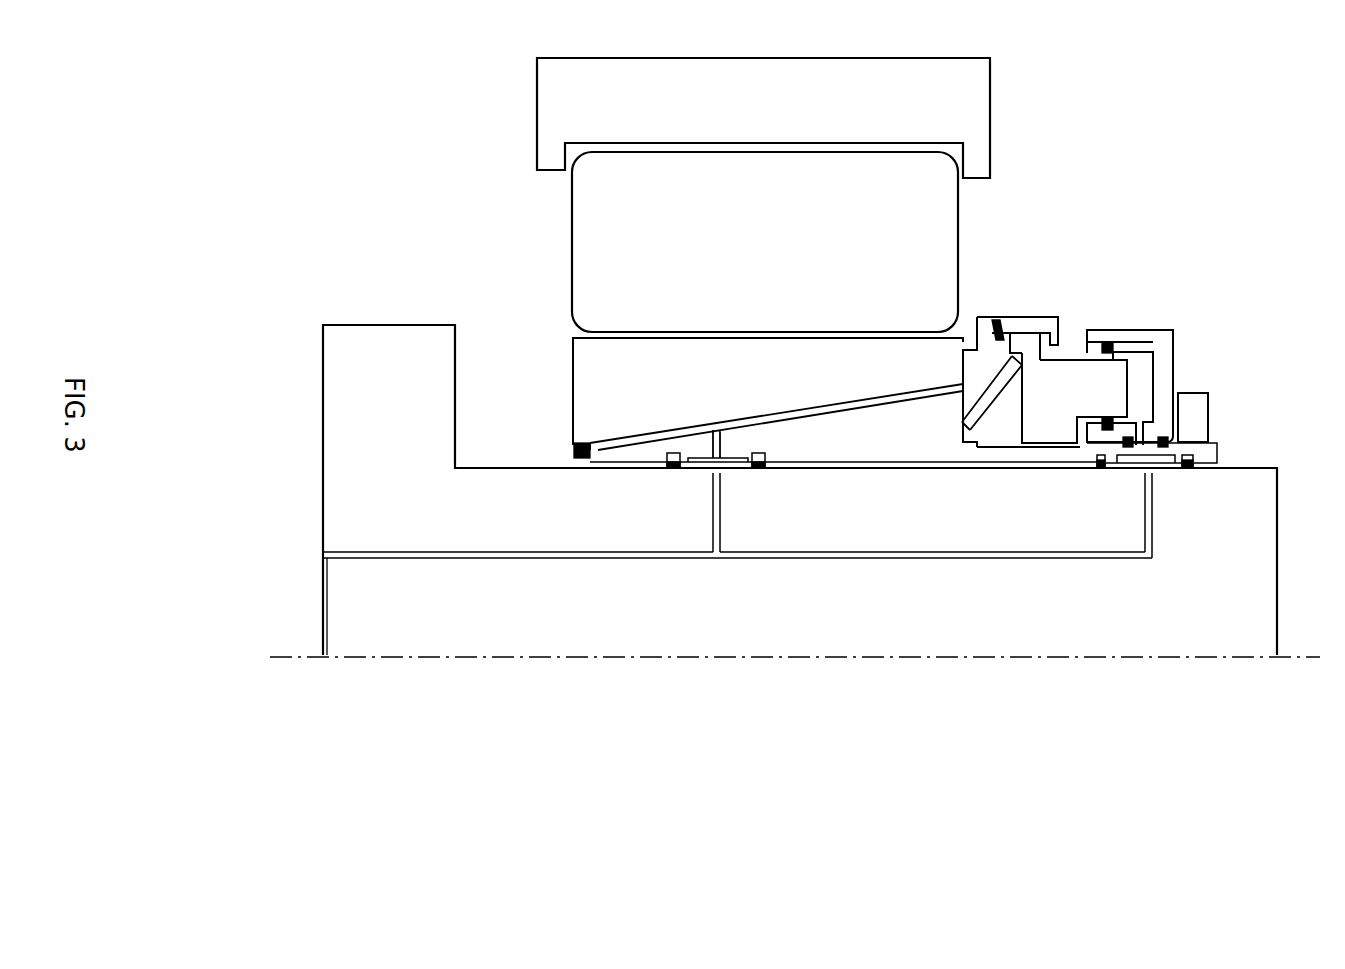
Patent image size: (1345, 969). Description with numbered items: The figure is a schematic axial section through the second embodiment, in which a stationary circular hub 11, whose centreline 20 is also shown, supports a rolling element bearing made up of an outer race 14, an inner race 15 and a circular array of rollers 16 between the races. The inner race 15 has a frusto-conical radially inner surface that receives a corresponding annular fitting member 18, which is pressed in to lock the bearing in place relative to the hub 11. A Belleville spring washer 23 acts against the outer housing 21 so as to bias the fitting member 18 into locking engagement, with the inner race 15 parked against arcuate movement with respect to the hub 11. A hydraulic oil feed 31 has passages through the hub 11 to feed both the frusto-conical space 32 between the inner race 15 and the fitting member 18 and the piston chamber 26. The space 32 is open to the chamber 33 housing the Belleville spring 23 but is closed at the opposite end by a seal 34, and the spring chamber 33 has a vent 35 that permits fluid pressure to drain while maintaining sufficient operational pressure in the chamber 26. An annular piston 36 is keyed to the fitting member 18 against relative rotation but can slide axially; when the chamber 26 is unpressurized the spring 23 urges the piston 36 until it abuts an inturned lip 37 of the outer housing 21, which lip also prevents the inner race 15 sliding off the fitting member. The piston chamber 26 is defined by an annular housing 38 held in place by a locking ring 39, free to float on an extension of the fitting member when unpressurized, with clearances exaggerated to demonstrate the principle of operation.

The hub 11 is at (345, 409).
The outer race 14 is at (972, 96).
The inner race 15 is at (596, 371).
The rollers 16 is at (937, 213).
The fitting member 18 is at (574, 455).
The centreline 20 is at (443, 659).
The outer housing 21 is at (1020, 325).
The Belleville spring washer 23 is at (966, 422).
The piston chamber 26 is at (1142, 385).
The hydraulic oil feed 31 is at (907, 558).
The frusto-conical space 32 is at (815, 423).
The spring chamber 33 is at (1000, 440).
The seal 34 is at (582, 468).
The vent 35 is at (990, 320).
The annular piston 36 is at (1085, 401).
The inturned lip 37 is at (1053, 333).
The annular housing 38 is at (1165, 333).
The locking ring 39 is at (1192, 425).